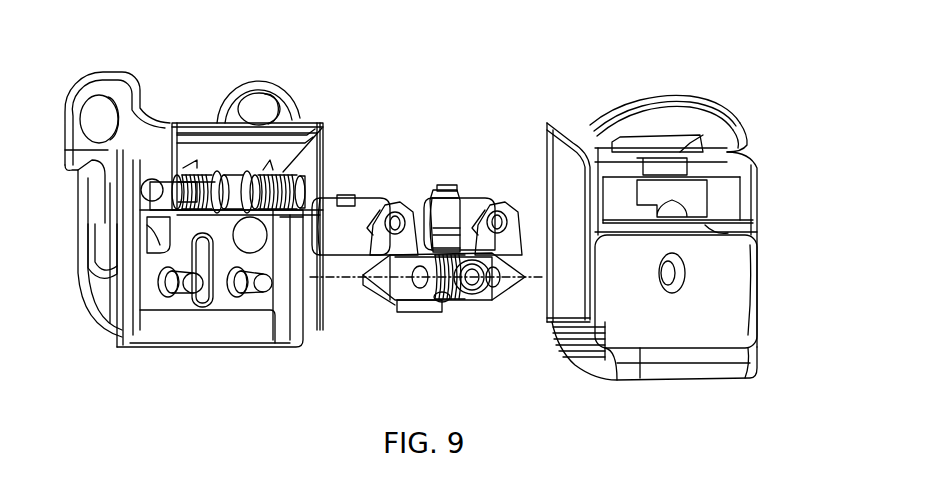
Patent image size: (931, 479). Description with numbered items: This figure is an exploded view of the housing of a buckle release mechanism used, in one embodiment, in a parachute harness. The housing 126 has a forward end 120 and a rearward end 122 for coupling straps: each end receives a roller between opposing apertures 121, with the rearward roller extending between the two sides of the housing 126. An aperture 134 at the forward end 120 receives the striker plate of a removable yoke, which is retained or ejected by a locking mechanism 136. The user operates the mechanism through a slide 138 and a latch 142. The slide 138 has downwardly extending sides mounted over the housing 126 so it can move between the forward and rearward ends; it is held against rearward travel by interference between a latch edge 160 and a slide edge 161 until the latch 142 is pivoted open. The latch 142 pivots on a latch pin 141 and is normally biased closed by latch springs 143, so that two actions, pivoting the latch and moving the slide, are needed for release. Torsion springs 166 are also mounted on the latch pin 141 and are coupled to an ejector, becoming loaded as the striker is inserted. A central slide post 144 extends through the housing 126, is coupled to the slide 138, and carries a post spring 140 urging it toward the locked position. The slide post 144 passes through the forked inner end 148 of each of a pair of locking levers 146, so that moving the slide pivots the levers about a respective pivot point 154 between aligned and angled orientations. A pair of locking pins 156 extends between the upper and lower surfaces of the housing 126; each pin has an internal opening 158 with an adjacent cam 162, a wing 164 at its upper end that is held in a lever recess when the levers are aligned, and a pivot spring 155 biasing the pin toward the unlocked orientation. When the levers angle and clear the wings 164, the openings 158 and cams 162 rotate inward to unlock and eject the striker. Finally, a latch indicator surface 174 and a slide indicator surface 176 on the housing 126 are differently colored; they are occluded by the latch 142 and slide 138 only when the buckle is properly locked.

The forward end 120 is at (194, 209).
The apertures 121 is at (93, 102).
The rearward end 122 is at (198, 98).
The housing 126 is at (325, 147).
The aperture 134 is at (112, 284).
The locking mechanism 136 is at (385, 317).
The slide 138 is at (750, 310).
The post spring 140 is at (440, 283).
The latch pin 141 is at (303, 187).
The latch 142 is at (605, 127).
The latch springs 143 is at (190, 198).
The slide post 144 is at (480, 303).
The locking levers 146 is at (385, 292).
The forked inner end 148 is at (447, 307).
The pivot point 154 is at (187, 292).
The pivot spring 155 is at (395, 214).
The locking pins 156 is at (335, 247).
The internal opening 158 is at (446, 212).
The latch edge 160 is at (710, 233).
The slide edge 161 is at (760, 225).
The cam 162 is at (367, 195).
The wing 164 is at (377, 257).
The torsion springs 166 is at (213, 172).
The latch indicator surface 174 is at (253, 137).
The slide indicator surface 176 is at (227, 333).